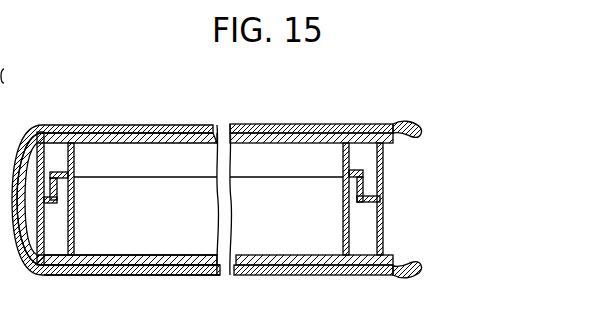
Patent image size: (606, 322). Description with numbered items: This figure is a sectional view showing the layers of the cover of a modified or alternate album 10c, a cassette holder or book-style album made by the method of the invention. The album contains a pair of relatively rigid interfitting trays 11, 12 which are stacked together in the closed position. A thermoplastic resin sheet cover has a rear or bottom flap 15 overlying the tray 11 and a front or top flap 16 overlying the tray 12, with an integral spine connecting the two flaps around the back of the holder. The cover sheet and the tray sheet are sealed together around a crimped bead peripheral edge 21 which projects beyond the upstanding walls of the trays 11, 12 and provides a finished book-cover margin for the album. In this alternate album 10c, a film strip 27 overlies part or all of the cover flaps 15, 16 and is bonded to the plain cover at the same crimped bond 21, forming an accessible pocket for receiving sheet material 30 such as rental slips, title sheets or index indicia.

The album 10c is at (95, 125).
The front or top flap 16 is at (177, 125).
The film strip 27 is at (241, 124).
The sheet material 30 is at (305, 124).
The crimped bead peripheral edge 21 is at (398, 124).
The tray 12 is at (74, 165).
The tray 11 is at (74, 235).
The rear or bottom flap 15 is at (182, 267).